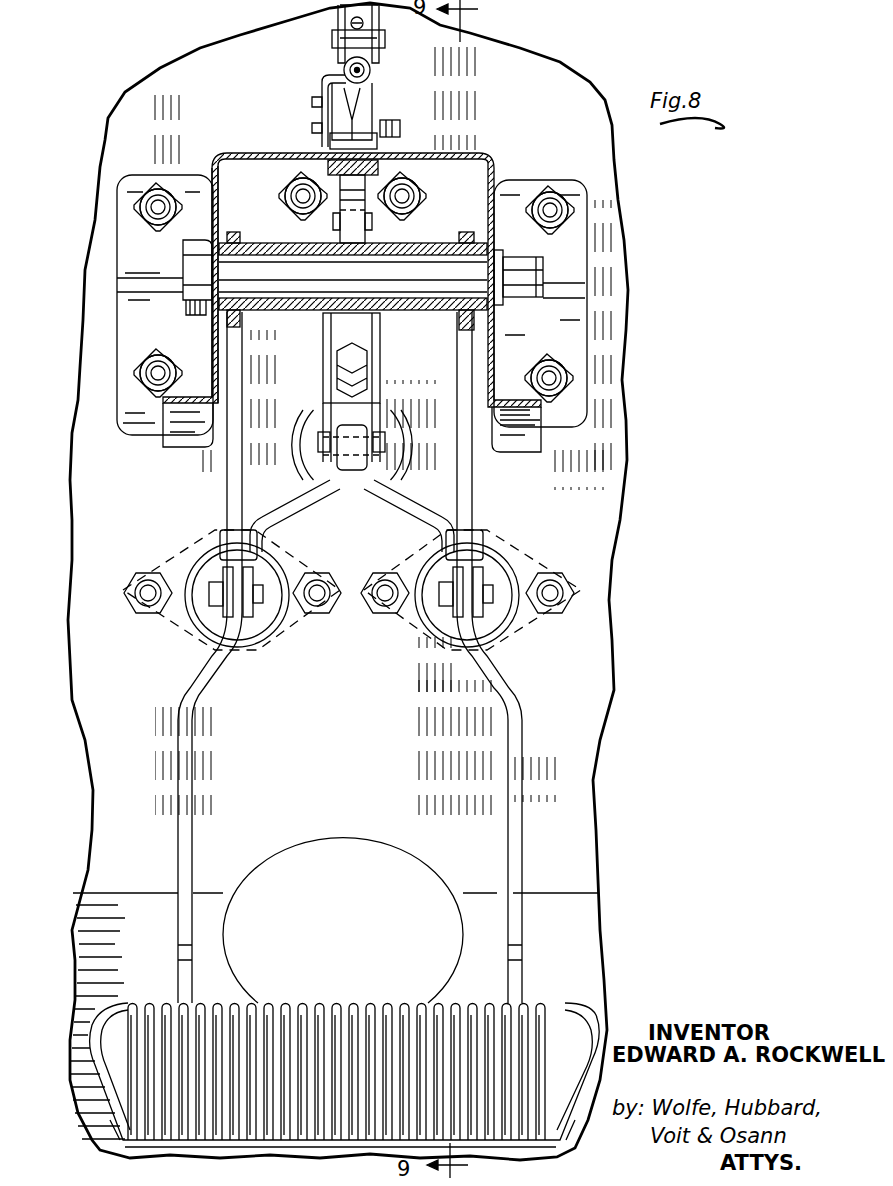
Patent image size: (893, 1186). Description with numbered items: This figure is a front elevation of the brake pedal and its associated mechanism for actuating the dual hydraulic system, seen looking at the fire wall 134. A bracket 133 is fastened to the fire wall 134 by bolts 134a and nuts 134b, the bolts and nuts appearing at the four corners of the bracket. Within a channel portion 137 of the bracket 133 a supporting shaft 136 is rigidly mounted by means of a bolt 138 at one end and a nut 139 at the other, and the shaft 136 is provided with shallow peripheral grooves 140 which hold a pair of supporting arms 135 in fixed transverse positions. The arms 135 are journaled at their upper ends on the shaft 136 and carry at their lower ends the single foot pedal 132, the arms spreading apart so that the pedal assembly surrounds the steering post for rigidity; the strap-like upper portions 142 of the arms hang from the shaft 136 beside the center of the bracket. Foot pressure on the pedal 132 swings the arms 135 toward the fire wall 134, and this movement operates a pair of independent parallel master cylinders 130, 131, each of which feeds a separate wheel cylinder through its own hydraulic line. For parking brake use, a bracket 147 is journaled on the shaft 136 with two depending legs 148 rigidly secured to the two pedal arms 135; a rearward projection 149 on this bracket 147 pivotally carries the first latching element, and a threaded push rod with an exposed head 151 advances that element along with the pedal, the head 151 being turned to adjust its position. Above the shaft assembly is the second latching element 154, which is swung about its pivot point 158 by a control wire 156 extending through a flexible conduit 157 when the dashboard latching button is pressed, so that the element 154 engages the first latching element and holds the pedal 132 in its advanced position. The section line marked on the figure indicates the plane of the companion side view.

The master cylinder 130 is at (427, 625).
The master cylinder 131 is at (253, 645).
The foot pedal 132 is at (273, 1003).
The bracket 133 is at (237, 152).
The fire wall 134 is at (598, 684).
The bolts 134a is at (148, 207).
The nuts 134b is at (158, 195).
The supporting arms 135 is at (187, 805).
The shaft 136 is at (420, 287).
The channel portion 137 is at (210, 340).
The bolt 138 is at (185, 262).
The nut 139 is at (545, 265).
The shallow peripheral grooves 140 is at (468, 325).
The link strap 142 is at (258, 313).
The bracket 147 is at (318, 468).
The depending legs 148 is at (430, 518).
The rearward projection 149 is at (385, 242).
The exposed head 151 is at (362, 362).
The second latching element 154 is at (335, 233).
The control wire 156 is at (368, 70).
The flexible conduit 157 is at (345, 67).
The pivot point 158 is at (402, 130).